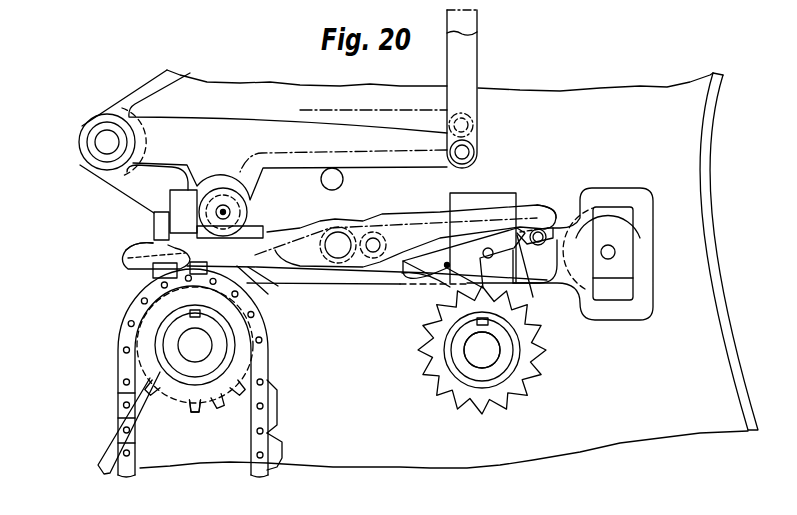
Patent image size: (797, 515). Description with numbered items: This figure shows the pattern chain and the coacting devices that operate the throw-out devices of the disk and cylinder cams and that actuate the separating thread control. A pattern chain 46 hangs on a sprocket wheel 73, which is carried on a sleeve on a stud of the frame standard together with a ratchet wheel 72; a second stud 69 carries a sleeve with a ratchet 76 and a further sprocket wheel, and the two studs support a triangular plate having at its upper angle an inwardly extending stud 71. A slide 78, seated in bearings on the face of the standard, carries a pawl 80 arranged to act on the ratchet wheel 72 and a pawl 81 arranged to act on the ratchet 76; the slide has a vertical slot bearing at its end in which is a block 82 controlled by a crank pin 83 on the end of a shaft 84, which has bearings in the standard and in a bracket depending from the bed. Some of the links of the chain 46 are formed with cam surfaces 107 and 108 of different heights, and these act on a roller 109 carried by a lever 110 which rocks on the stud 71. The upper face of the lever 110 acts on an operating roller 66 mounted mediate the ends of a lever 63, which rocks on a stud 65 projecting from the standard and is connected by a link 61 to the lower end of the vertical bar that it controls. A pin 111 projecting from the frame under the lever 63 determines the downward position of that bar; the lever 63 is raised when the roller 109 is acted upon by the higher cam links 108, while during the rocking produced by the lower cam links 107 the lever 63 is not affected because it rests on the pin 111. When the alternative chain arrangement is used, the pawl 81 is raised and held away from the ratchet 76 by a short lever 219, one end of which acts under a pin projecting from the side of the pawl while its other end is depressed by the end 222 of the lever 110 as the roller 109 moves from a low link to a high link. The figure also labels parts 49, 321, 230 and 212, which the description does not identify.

The link 61 is at (478, 13).
The lever 63 is at (203, 137).
The stud 65 is at (99, 143).
The operating roller 66 is at (236, 203).
The pin 111 is at (344, 181).
The slide 78 is at (367, 221).
The block 49 is at (474, 203).
The end of lever 222 is at (533, 212).
The block 82 is at (620, 237).
The crank pin 83 is at (618, 252).
The shaft 84 is at (625, 293).
The roller 109 is at (145, 270).
The cam surfaces 107 is at (150, 278).
The pawl 80 is at (258, 288).
The lever 110 is at (312, 262).
The stud 71 is at (339, 258).
The finger 321 is at (420, 282).
The short lever 219 is at (445, 270).
The pawl 81 is at (443, 305).
The stud 69 is at (463, 352).
The link pin 230 is at (524, 282).
The pattern chain 46 is at (117, 393).
The sprocket wheel 73 is at (200, 396).
The ratchet wheel 72 is at (223, 400).
The cam surfaces 108 is at (277, 443).
The ratchet 76 is at (535, 357).
The shaft 212 is at (477, 374).